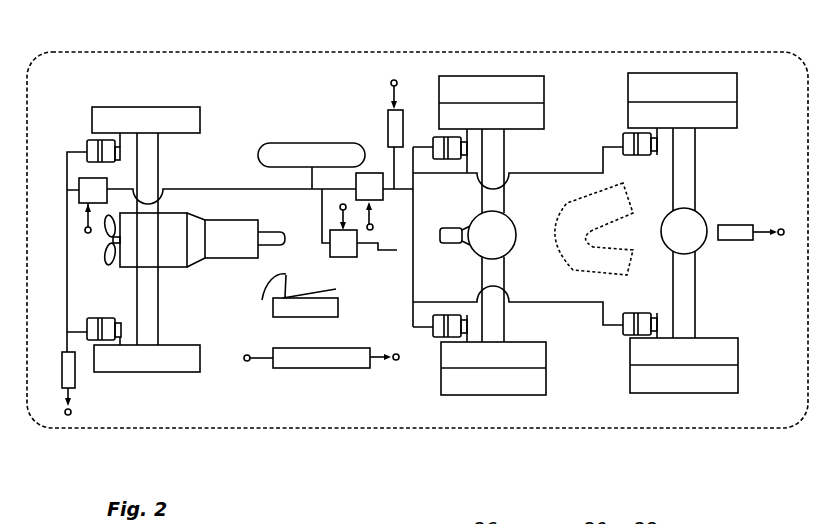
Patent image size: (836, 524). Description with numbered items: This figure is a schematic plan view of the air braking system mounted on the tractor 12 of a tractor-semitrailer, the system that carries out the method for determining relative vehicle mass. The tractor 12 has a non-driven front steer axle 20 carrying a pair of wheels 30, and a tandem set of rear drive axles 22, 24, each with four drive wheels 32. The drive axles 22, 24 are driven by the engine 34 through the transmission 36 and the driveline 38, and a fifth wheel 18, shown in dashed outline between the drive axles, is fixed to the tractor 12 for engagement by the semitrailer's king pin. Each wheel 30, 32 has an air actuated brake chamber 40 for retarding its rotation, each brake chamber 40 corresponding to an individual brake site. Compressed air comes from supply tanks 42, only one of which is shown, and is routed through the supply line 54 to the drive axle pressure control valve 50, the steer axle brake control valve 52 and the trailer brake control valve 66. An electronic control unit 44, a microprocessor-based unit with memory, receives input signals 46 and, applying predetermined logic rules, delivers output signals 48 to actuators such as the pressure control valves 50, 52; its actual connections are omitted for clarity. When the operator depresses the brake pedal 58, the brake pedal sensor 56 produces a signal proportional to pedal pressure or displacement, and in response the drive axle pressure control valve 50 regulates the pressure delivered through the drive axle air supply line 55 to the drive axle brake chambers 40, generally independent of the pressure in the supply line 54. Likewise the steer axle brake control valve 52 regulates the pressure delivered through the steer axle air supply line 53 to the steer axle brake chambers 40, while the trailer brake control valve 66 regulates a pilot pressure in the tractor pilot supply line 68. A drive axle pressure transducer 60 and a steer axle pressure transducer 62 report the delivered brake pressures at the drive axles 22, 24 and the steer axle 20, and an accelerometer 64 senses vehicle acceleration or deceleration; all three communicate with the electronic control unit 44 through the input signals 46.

The tractor 12 is at (750, 428).
The fifth wheel 18 is at (573, 270).
The front steer axle 20 is at (195, 78).
The rear drive axle 22 is at (458, 68).
The rear drive axle 24 is at (660, 68).
The wheels 30 is at (107, 112).
The drive wheels 32 is at (505, 80).
The engine 34 is at (177, 258).
The transmission 36 is at (228, 250).
The driveline 38 is at (265, 230).
The air actuated brake chambers 40 is at (93, 338).
The supply tanks 42 is at (268, 148).
The electronic control unit 44 is at (335, 367).
The input signals 46 is at (257, 360).
The output signals 48 is at (377, 367).
The drive axle pressure control valve 50 is at (366, 182).
The steer axle brake control valve 52 is at (106, 178).
The steer axle air supply line 53 is at (65, 166).
The supply line 54 is at (206, 188).
The drive axle air supply line 55 is at (415, 192).
The brake pedal sensor 56 is at (338, 310).
The brake pedal 58 is at (288, 305).
The drive axle pressure transducer 60 is at (388, 120).
The steer axle pressure transducer 62 is at (77, 378).
The accelerometer 64 is at (738, 240).
The trailer brake control valve 66 is at (348, 257).
The tractor pilot supply line 68 is at (387, 253).